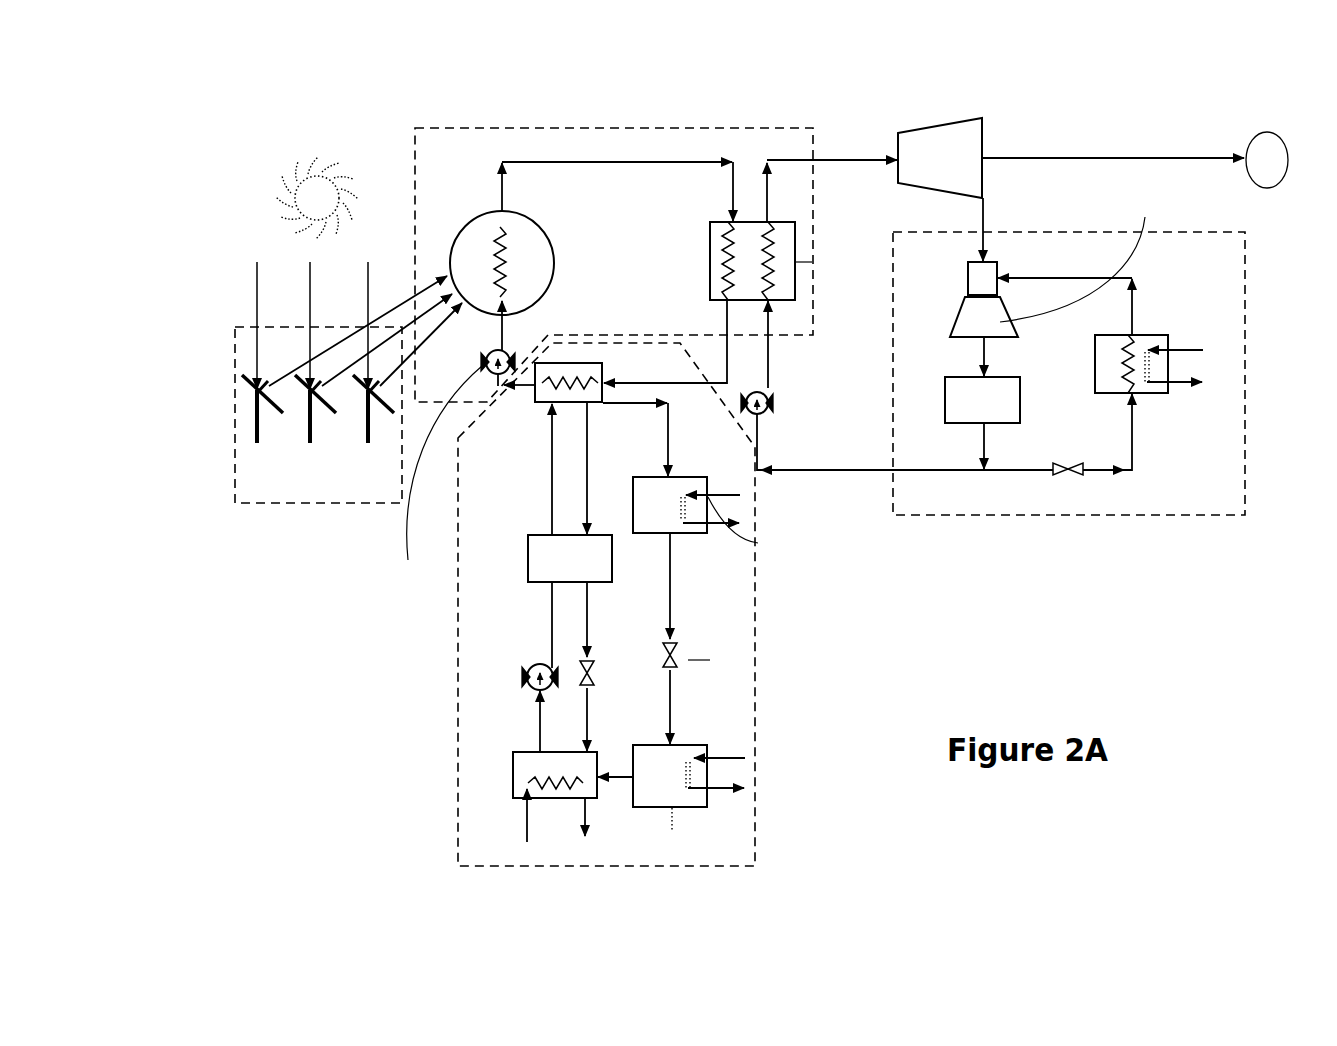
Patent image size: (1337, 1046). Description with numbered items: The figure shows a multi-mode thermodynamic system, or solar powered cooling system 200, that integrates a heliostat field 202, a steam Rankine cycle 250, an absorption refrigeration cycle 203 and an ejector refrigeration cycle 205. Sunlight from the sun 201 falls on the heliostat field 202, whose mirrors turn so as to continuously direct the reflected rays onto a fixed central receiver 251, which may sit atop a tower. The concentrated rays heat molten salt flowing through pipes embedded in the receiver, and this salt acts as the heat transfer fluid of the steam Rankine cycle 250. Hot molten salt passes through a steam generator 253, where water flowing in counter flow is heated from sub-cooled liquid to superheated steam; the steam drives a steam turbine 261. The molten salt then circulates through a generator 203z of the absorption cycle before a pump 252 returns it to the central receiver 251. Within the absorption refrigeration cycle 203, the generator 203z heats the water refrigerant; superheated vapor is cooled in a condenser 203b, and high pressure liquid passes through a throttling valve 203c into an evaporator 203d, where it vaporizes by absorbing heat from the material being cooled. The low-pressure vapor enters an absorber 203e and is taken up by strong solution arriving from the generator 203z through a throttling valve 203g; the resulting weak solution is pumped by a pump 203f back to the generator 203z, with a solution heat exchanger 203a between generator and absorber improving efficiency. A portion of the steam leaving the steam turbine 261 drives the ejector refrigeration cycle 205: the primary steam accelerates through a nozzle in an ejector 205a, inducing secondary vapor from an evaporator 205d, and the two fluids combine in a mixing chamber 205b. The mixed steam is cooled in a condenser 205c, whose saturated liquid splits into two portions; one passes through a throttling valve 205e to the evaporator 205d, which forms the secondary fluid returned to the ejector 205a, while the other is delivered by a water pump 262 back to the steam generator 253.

The multi-mode thermodynamic system 200 is at (286, 141).
The sun 201 is at (362, 188).
The heliostat field 202 is at (279, 505).
The absorption refrigeration cycle 203 is at (757, 648).
The solution heat exchanger 203a is at (528, 563).
The condenser 203b is at (675, 477).
The throttling valve 203c is at (677, 652).
The evaporator 203d is at (680, 745).
The absorber 203e is at (512, 772).
The pump 203f is at (523, 673).
The throttling valve 203g is at (595, 685).
The generator 203z is at (603, 372).
The ejector refrigeration cycle 205 is at (1002, 402).
The ejector 205a is at (997, 262).
The mixing chamber 205b is at (1000, 322).
The condenser 205c is at (990, 377).
The evaporator 205d is at (1142, 330).
The throttling valve 205e is at (1070, 462).
The steam Rankine cycle 250 is at (812, 143).
The central receiver 251 is at (520, 213).
The pump 252 is at (509, 352).
The steam generator 253 is at (710, 275).
The steam turbine 261 is at (890, 167).
The water pump 262 is at (760, 392).